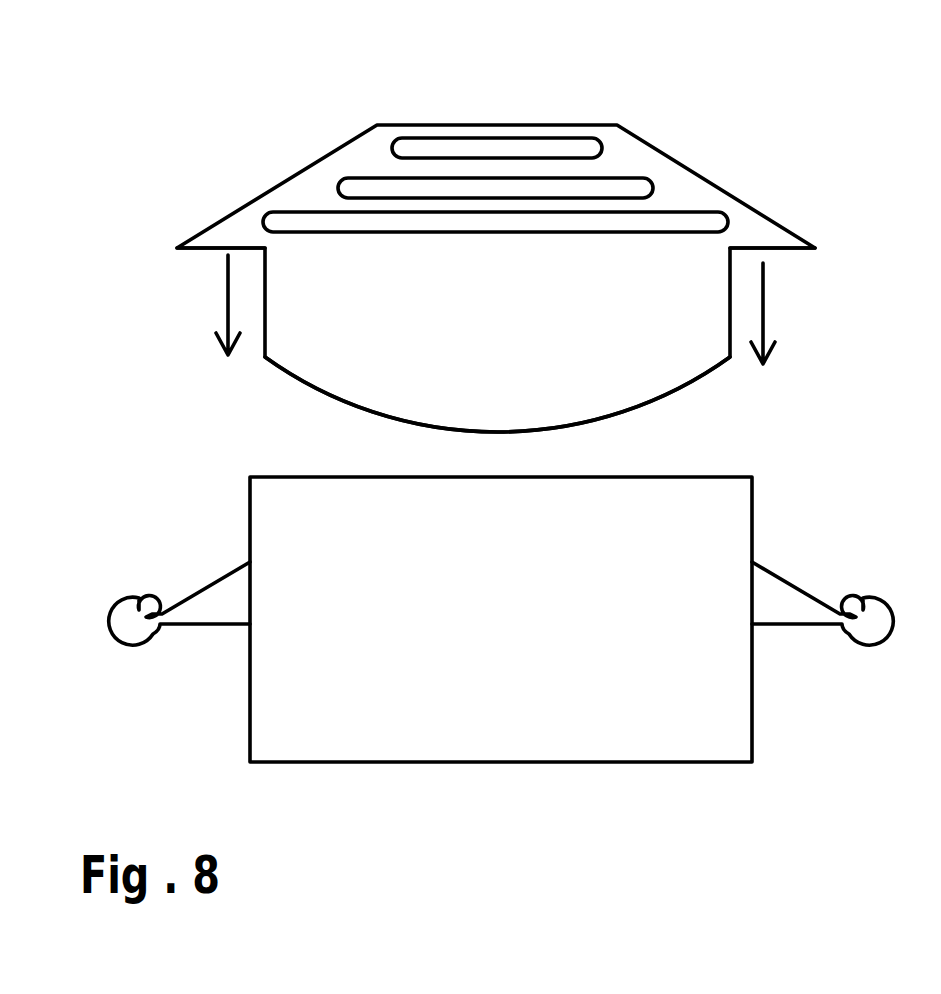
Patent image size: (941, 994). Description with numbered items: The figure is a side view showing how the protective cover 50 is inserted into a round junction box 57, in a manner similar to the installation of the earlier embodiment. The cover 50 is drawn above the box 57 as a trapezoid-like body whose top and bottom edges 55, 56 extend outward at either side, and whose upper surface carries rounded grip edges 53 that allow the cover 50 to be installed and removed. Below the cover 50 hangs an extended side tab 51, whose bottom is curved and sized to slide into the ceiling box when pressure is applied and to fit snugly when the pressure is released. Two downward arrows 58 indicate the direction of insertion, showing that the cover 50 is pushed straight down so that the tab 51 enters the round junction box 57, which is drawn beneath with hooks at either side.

The protective cover 50 is at (540, 125).
The extended side tab 51 is at (350, 403).
The rounded grip edge 53 is at (592, 190).
The top edge 55 is at (172, 242).
The bottom edge 56 is at (780, 218).
The round junction box 57 is at (570, 767).
The arrows 58 is at (490, 309).